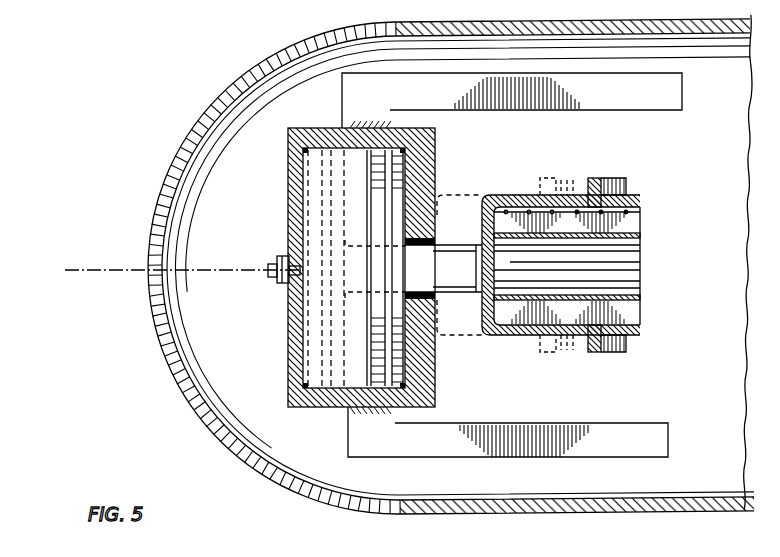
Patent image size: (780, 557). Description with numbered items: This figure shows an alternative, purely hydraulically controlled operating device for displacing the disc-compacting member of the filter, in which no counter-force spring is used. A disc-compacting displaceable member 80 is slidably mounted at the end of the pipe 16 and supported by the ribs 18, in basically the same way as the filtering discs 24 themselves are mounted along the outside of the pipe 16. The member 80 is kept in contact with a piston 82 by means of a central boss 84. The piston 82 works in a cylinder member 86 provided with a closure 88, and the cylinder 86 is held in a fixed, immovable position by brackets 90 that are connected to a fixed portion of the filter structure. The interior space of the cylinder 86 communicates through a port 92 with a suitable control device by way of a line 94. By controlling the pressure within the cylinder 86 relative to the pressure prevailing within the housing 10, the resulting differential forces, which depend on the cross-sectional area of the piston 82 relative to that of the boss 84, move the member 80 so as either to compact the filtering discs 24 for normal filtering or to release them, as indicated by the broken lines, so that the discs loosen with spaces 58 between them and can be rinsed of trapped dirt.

The housing 10 is at (497, 31).
The pipe 16 is at (640, 247).
The ribs 18 is at (633, 218).
The discs 24 is at (610, 180).
The spaces 58 is at (570, 346).
The disc-compacting displaceable member 80 is at (498, 193).
The piston 82 is at (305, 178).
The central boss 84 is at (455, 280).
The cylinder member 86 is at (292, 232).
The closure 88 is at (433, 181).
The brackets 90 is at (660, 82).
The port 92 is at (283, 285).
The line 94 is at (101, 266).